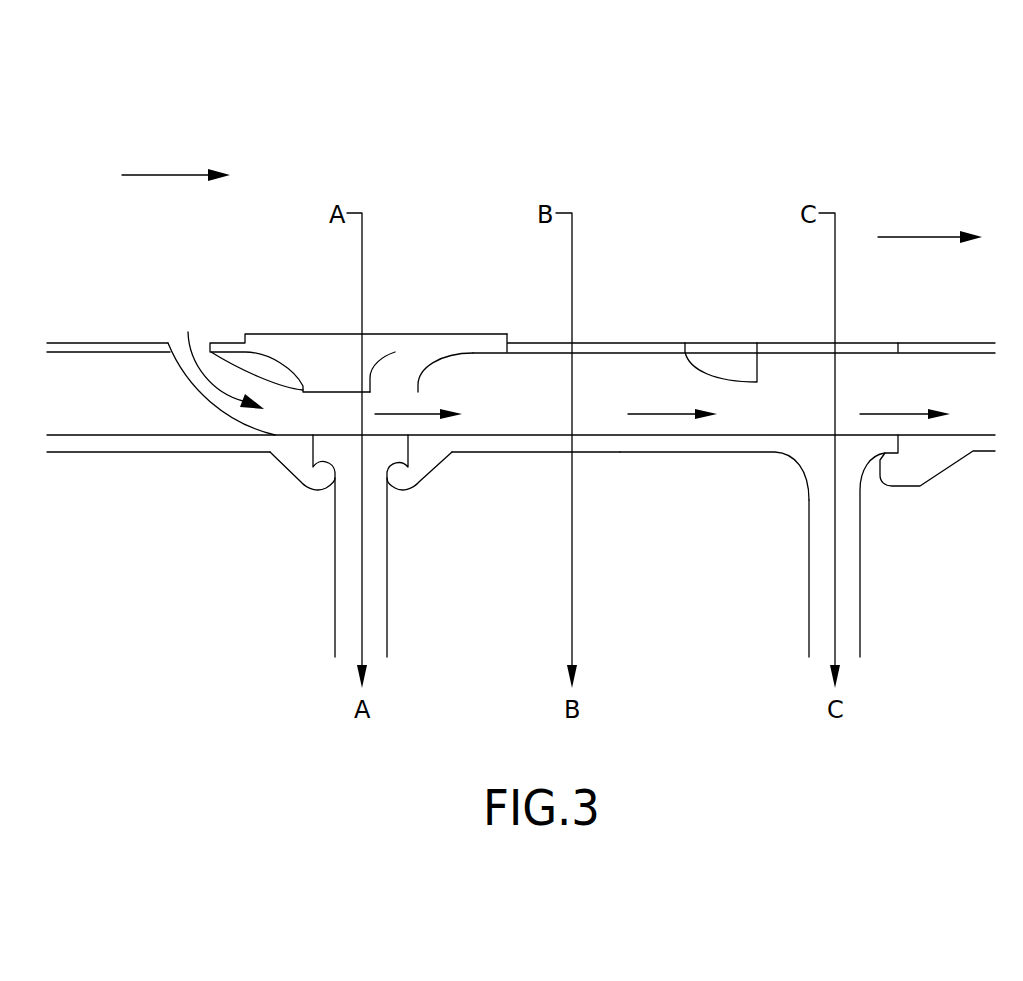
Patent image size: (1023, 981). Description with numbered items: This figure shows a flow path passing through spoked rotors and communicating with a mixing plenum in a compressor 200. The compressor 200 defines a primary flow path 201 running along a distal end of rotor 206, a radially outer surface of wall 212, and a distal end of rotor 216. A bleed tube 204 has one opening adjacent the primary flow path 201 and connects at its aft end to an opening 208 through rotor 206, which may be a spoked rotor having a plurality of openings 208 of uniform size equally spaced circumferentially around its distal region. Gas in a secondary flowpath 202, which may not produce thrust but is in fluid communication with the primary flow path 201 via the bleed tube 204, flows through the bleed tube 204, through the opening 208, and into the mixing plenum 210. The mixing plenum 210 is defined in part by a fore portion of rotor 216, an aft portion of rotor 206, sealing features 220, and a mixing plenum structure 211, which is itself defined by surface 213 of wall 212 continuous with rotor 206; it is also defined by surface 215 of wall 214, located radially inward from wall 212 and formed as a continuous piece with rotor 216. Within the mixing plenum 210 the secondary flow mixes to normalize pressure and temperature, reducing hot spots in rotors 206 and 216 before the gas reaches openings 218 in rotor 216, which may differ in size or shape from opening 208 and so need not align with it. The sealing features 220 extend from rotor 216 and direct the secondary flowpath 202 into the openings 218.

The compressor 200 is at (277, 120).
The primary flow path 201 is at (165, 175).
The secondary flowpath 202 is at (188, 333).
The bleed tube 204 is at (190, 390).
The rotor 206 is at (388, 573).
The opening 208 is at (395, 352).
The mixing plenum 210 is at (541, 380).
The mixing plenum structure 211 is at (685, 343).
The wall 212 is at (635, 350).
The surface 213 is at (612, 347).
The wall 214 is at (618, 440).
The surface 215 is at (720, 436).
The rotor 216 is at (862, 565).
The opening 218 is at (847, 375).
The sealing feature 220 is at (735, 372).